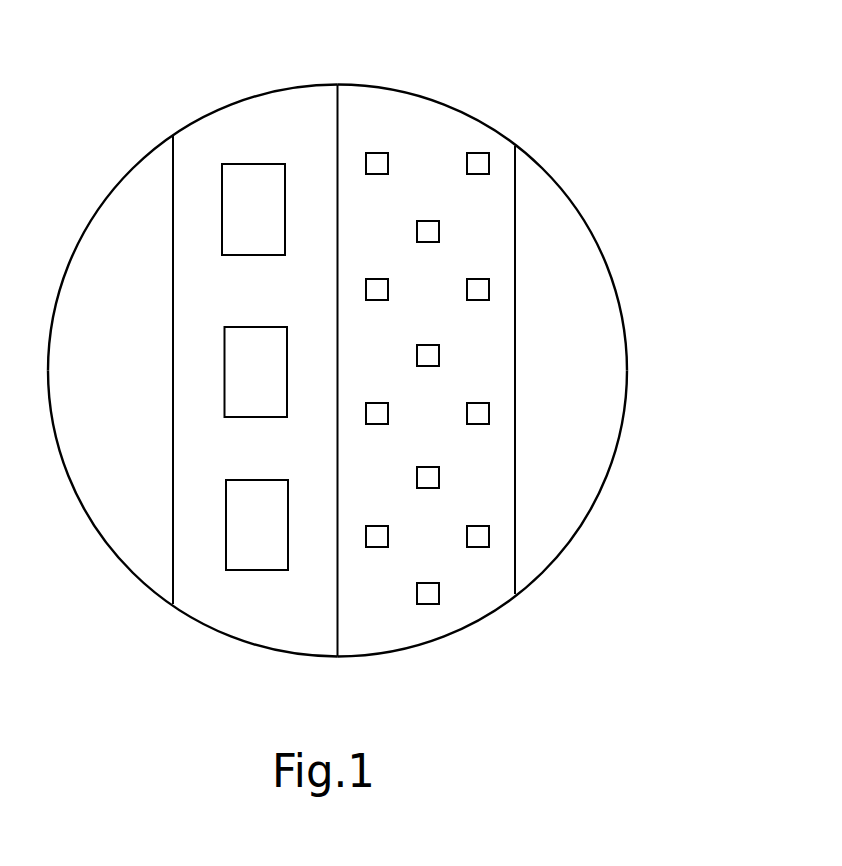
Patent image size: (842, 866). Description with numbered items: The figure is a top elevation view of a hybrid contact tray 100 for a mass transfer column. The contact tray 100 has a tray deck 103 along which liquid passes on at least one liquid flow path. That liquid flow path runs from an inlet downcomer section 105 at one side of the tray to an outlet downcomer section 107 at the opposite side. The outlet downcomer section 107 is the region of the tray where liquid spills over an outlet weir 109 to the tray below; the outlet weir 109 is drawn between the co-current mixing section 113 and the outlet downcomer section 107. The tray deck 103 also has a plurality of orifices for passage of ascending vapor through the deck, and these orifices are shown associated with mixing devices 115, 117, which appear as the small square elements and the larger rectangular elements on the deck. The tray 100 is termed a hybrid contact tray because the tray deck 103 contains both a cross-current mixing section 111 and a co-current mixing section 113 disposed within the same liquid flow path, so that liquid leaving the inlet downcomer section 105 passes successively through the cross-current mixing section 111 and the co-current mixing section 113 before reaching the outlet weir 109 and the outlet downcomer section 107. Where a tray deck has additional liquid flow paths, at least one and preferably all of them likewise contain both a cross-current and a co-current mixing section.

The contact tray 100 is at (617, 133).
The tray deck 103 is at (197, 623).
The inlet downcomer section 105 is at (585, 268).
The outlet downcomer section 107 is at (112, 217).
The outlet weir 109 is at (175, 185).
The cross-current mixing section 111 is at (437, 147).
The co-current mixing section 113 is at (262, 113).
The mixing devices 115 is at (428, 488).
The mixing devices 117 is at (238, 527).